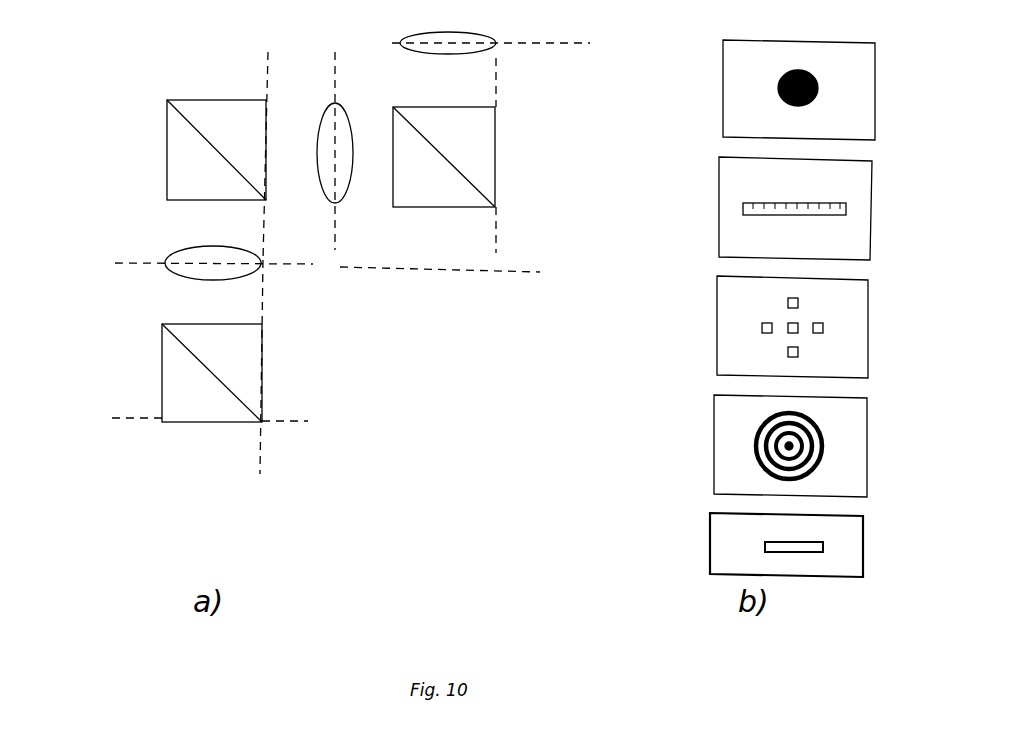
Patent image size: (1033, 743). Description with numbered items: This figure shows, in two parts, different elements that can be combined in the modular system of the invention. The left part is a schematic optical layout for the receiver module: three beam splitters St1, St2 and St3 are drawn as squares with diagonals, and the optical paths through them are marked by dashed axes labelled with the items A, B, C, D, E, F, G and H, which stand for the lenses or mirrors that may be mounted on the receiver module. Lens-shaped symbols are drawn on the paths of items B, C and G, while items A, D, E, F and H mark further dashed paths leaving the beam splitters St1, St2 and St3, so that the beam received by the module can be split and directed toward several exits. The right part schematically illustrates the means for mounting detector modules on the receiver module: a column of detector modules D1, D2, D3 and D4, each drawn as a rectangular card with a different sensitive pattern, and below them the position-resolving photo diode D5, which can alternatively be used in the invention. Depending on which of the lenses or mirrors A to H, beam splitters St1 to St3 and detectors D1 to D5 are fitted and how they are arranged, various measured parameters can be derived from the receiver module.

The lens or mirror A is at (267, 133).
The lens or mirror B is at (335, 128).
The lens or mirror C is at (180, 257).
The lens or mirror D is at (176, 414).
The lens or mirror E is at (261, 391).
The lens or mirror F is at (470, 267).
The lens or mirror G is at (503, 42).
The lens or mirror H is at (513, 155).
The beam splitter St1 is at (189, 150).
The beam splitter St2 is at (185, 373).
The beam splitter St3 is at (444, 176).
The detector D1 (spot) D1 is at (829, 90).
The detector D2 (line array) D2 is at (827, 208).
The detector D3 (quadrant array) D3 is at (825, 327).
The detector D4 (concentric rings) D4 is at (823, 446).
The position-resolving photo diode D5 is at (818, 545).